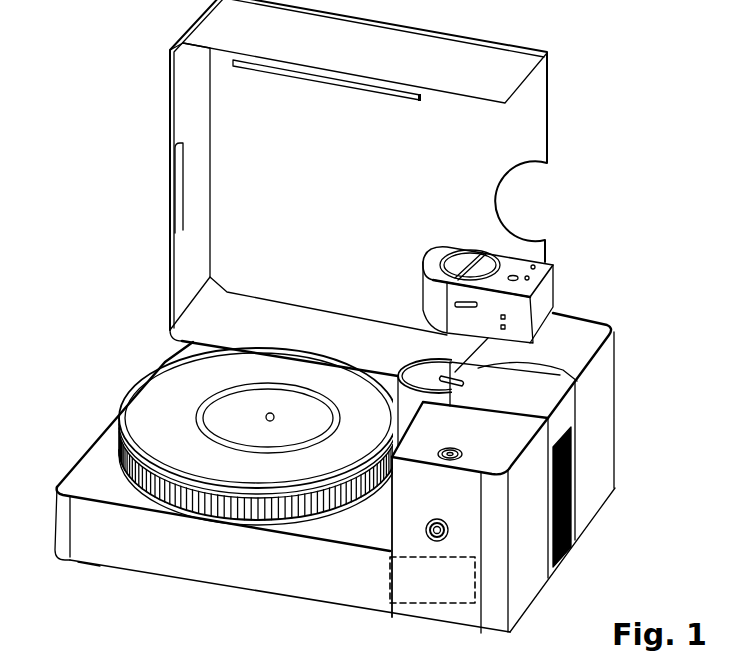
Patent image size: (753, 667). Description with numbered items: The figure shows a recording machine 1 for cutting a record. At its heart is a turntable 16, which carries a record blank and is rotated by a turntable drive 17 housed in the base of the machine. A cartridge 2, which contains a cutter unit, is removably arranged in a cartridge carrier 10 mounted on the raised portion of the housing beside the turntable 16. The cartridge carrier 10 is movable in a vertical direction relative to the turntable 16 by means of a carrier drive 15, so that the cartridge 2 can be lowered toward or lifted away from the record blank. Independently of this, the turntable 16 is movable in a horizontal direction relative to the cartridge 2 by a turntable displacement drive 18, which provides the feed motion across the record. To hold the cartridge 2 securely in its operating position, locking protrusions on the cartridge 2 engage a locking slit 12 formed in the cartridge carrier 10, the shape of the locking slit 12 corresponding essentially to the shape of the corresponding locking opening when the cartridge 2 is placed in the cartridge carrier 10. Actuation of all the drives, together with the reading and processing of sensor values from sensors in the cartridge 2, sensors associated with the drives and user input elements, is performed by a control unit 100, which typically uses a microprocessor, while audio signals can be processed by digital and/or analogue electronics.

The recording machine 1 is at (74, 225).
The cartridge 2 is at (543, 300).
The cartridge carrier 10 is at (497, 390).
The locking slit 12 is at (465, 382).
The carrier drive 15 is at (588, 547).
The turntable 16 is at (163, 418).
The turntable drive 17 is at (147, 582).
The turntable displacement drive 18 is at (237, 597).
The control unit 100 is at (447, 594).